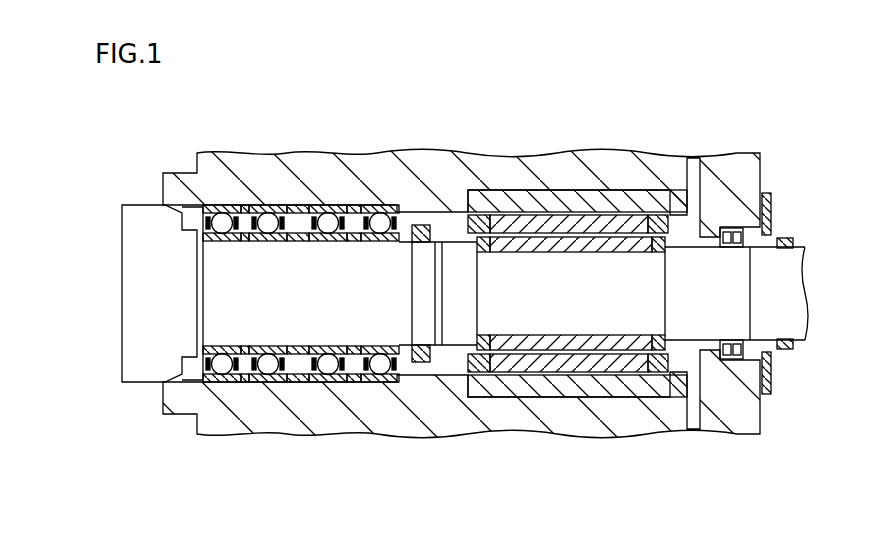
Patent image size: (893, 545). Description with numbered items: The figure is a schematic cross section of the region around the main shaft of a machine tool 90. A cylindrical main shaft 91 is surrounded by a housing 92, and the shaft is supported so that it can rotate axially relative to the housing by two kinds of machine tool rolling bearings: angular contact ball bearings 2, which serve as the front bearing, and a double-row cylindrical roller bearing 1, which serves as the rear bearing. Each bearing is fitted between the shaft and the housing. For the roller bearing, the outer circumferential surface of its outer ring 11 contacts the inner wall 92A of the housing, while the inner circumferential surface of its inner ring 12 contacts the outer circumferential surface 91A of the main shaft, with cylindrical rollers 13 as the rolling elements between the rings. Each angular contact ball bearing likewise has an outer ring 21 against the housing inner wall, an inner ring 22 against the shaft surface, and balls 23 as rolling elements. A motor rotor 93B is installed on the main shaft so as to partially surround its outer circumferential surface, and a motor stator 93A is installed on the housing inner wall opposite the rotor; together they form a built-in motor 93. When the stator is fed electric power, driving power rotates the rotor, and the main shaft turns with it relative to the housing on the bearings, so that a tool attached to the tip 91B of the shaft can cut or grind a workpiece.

The machine tool 90 is at (797, 110).
The double-row cylindrical roller bearing 1 is at (726, 204).
The outer ring 11 is at (737, 226).
The inner ring 12 is at (740, 253).
The cylindrical rollers 13 is at (745, 237).
The angular contact ball bearings 2 is at (292, 293).
The outer ring 21 is at (237, 383).
The inner ring 22 is at (195, 358).
The balls 23 is at (223, 372).
The main shaft 91 is at (124, 293).
The outer circumferential surface 91A is at (203, 238).
The tip 91B is at (122, 320).
The housing 92 is at (418, 224).
The inner wall 92A is at (439, 212).
The motor 93 is at (577, 350).
The motor stator 93A is at (553, 363).
The motor rotor 93B is at (594, 345).